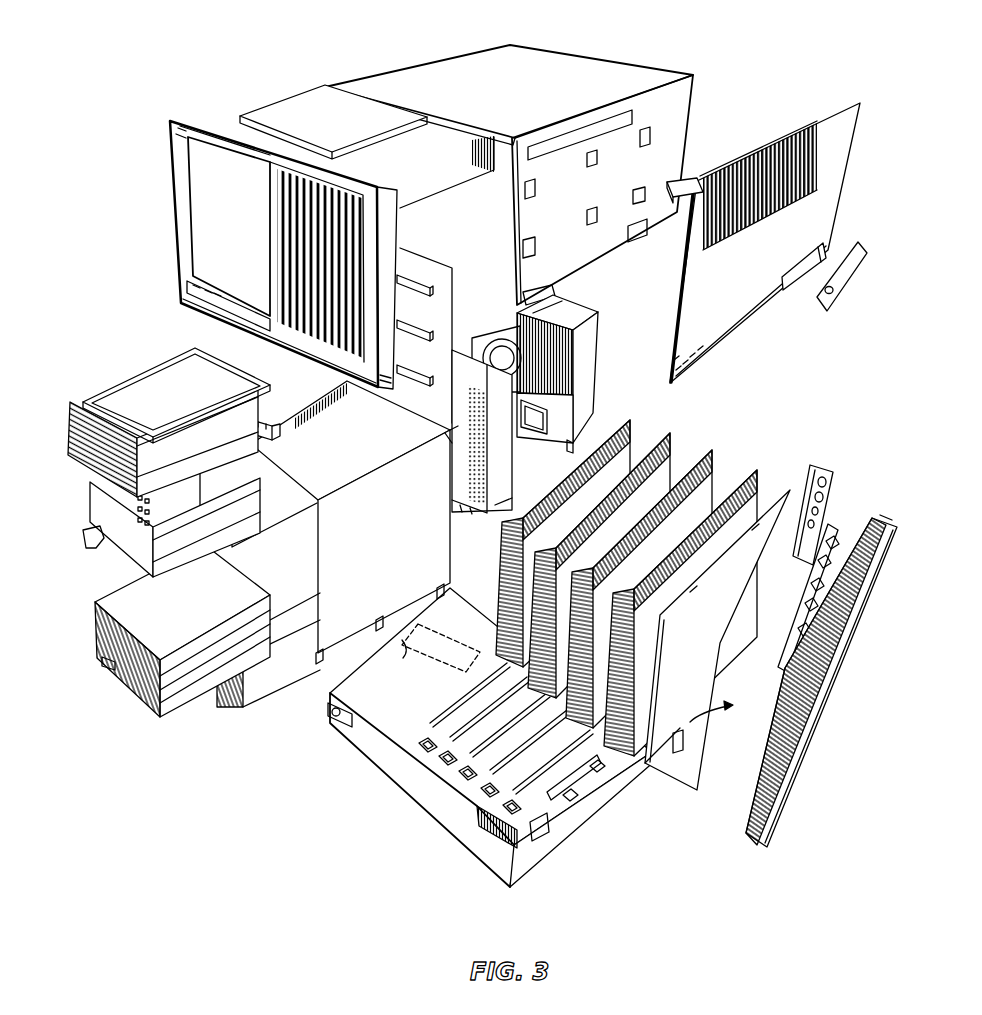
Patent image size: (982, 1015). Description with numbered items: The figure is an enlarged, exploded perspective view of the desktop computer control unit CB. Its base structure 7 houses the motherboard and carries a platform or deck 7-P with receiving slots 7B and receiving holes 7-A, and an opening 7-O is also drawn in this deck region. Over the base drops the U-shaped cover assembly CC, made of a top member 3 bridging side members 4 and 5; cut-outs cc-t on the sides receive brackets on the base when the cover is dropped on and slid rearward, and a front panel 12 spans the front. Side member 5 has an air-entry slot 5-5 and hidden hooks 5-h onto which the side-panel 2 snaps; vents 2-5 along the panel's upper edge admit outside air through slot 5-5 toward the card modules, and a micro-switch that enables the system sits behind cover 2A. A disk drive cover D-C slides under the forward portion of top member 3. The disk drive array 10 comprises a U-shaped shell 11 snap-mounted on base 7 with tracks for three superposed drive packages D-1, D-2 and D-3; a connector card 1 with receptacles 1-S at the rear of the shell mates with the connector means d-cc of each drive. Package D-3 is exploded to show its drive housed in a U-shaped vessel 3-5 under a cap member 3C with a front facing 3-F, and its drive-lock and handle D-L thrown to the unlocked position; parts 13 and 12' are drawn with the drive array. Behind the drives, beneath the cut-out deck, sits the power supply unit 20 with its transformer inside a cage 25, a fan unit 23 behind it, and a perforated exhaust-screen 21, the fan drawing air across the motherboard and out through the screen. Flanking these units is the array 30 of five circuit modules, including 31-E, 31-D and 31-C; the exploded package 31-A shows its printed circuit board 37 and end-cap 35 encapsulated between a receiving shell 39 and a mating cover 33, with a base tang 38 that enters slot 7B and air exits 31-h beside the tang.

The control unit CB is at (281, 47).
The cover assembly CC is at (642, 60).
The top member 3 is at (527, 91).
The disk drive cover D-C is at (347, 131).
The side member 4 is at (436, 173).
The side member 5 is at (616, 190).
The air-entry slot 5-5 is at (635, 114).
The hooks 5-h is at (592, 212).
The cut-outs cc-t is at (560, 280).
The side-panel 2 is at (763, 236).
The thru-slits or vents 2-5 is at (774, 140).
The cover 2A is at (848, 274).
The front panel 12 is at (265, 255).
The connector card 1 is at (441, 333).
The electrical receptacles 1-S is at (445, 285).
The fan unit 23 is at (476, 338).
The cage 25 is at (509, 462).
The power supply unit 20 is at (583, 374).
The perforated plastic exhaust-screen 21 is at (588, 392).
The U-shaped shell 11 is at (388, 548).
The disk drive array 10 is at (200, 607).
The cage side member 13 is at (93, 717).
The cage rail 12' is at (214, 720).
The disk drive package D-1 is at (272, 686).
The disk drive package D-2 is at (96, 636).
The electrical connector means d-cc is at (282, 436).
The U-shaped vessel 3-5 is at (137, 552).
The drive-lock assembly and handle D-L is at (83, 542).
The disk drive package D-3 is at (88, 513).
The facing 3-F is at (84, 400).
The cap member 3C is at (180, 348).
The base structure 7 is at (492, 737).
The receiving slot 7B is at (456, 693).
The receiving hole 7-A is at (432, 738).
The base opening 7-O is at (455, 648).
The platform or deck 7-P is at (394, 660).
The circuit module 31-E is at (500, 565).
The circuit module 31-D is at (668, 450).
The circuit module 31-C is at (720, 468).
The array of circuit modules 30 is at (903, 488).
The mating plastic cover 33 is at (706, 630).
The base tang 38 is at (690, 752).
The air exit openings 31-h is at (657, 765).
The end-cap 35 is at (836, 478).
The printed circuit board 37 is at (830, 528).
The receiving plastic shell 39 is at (826, 740).
The circuit package 31-A is at (766, 855).